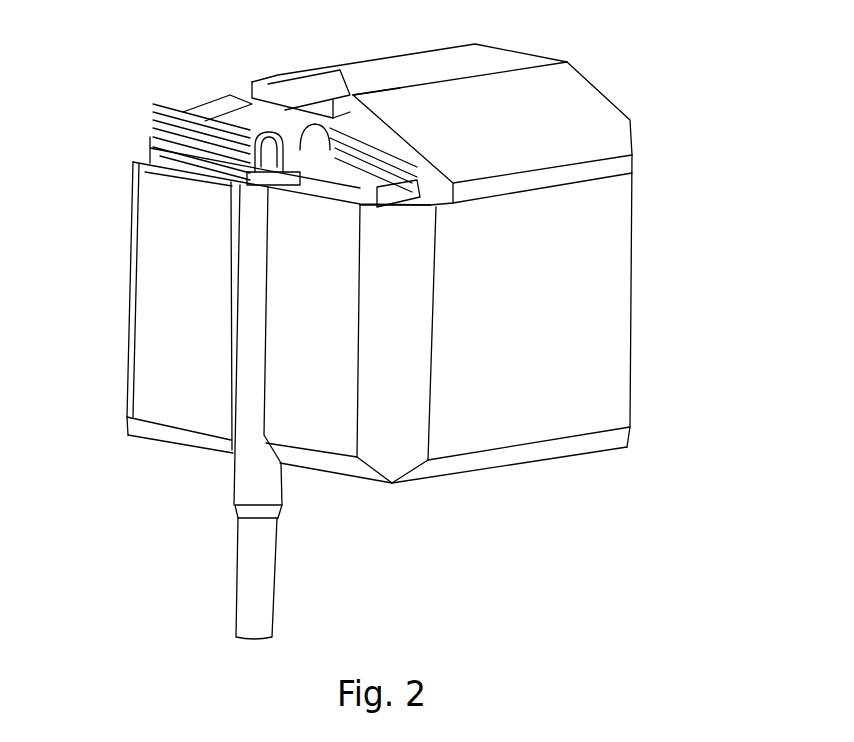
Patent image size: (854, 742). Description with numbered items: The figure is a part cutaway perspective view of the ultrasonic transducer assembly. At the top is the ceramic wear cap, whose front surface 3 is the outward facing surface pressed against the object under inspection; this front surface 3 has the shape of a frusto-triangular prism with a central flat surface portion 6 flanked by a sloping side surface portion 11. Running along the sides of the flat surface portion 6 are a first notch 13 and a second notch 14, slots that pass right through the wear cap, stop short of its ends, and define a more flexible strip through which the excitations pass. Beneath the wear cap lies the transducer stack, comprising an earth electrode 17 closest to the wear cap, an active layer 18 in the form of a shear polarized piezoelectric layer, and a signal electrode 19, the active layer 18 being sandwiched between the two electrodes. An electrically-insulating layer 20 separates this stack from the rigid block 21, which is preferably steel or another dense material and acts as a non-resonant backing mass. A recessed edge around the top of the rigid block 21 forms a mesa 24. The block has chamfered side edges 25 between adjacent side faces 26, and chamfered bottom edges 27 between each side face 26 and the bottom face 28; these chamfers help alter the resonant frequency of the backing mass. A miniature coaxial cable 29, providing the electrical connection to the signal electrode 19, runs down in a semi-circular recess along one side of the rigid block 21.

The front surface 3 is at (375, 328).
The central flat surface portion 6 is at (506, 52).
The first side sloping surface portion 11 is at (600, 90).
The first notch 13 is at (280, 74).
The second notch 14 is at (377, 92).
The earth electrode 17 is at (232, 107).
The active layer 18 is at (290, 118).
The signal electrode 19 is at (207, 138).
The electrically-insulating layer 20 is at (187, 138).
The rigid block 21 is at (148, 366).
The mesa 24 is at (160, 150).
The chamfered side edges 25 is at (392, 318).
The side faces 26 is at (150, 246).
The chamfered bottom edges 27 is at (163, 442).
The bottom face 28 is at (582, 458).
The miniature coaxial cable 29 is at (250, 305).